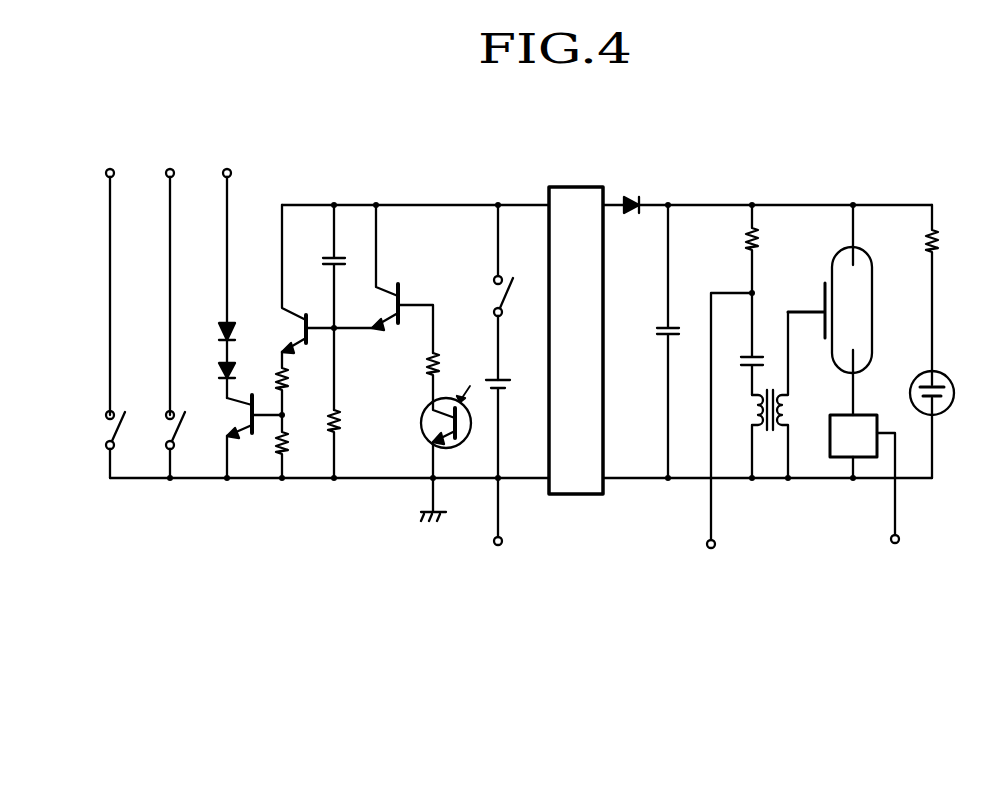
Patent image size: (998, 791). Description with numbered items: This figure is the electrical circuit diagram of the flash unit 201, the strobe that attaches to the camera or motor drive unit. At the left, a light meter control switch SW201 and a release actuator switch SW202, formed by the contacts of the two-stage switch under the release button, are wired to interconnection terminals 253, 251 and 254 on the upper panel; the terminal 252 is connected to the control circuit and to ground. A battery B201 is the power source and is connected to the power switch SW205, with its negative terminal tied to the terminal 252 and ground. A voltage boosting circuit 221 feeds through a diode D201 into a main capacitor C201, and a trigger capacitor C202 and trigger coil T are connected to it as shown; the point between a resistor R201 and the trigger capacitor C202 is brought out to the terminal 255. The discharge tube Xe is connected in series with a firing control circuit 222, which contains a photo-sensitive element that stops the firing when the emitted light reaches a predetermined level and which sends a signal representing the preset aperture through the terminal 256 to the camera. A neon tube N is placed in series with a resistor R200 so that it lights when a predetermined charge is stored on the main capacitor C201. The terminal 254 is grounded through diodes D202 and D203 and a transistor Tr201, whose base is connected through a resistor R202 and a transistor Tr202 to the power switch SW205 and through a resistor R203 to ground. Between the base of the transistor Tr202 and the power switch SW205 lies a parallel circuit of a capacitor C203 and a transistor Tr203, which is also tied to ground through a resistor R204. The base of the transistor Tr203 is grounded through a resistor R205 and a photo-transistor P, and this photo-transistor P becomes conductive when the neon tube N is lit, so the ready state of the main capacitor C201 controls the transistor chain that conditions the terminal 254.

The flash unit 201 is at (746, 186).
The voltage boosting circuit 221 is at (549, 187).
The firing control circuit 222 is at (862, 416).
The interconnection terminal 251 is at (171, 169).
The terminal 252 is at (498, 546).
The interconnection terminal 253 is at (111, 169).
The interconnection terminal 254 is at (228, 169).
The interconnection terminal 255 is at (711, 549).
The interconnection terminal 256 is at (895, 544).
The light meter control switch SW201 is at (166, 433).
The release actuator switch SW202 is at (100, 433).
The power switch SW205 is at (494, 308).
The transistor Tr201 is at (237, 436).
The transistor Tr202 is at (293, 279).
The transistor Tr203 is at (383, 279).
The diode D201 is at (638, 190).
The diode D202 is at (221, 324).
The diode D203 is at (220, 377).
The resistor R200 is at (954, 288).
The resistor R201 is at (745, 245).
The resistor R202 is at (304, 383).
The resistor R203 is at (301, 446).
The resistor R204 is at (355, 443).
The resistor R205 is at (455, 376).
The main capacitor C201 is at (656, 335).
The trigger capacitor C202 is at (762, 352).
The capacitor C203 is at (324, 259).
The battery B201 is at (517, 423).
The photo-transistor P is at (427, 412).
The trigger coil T is at (781, 395).
The discharge tube Xe is at (874, 331).
The neon tube N is at (960, 440).